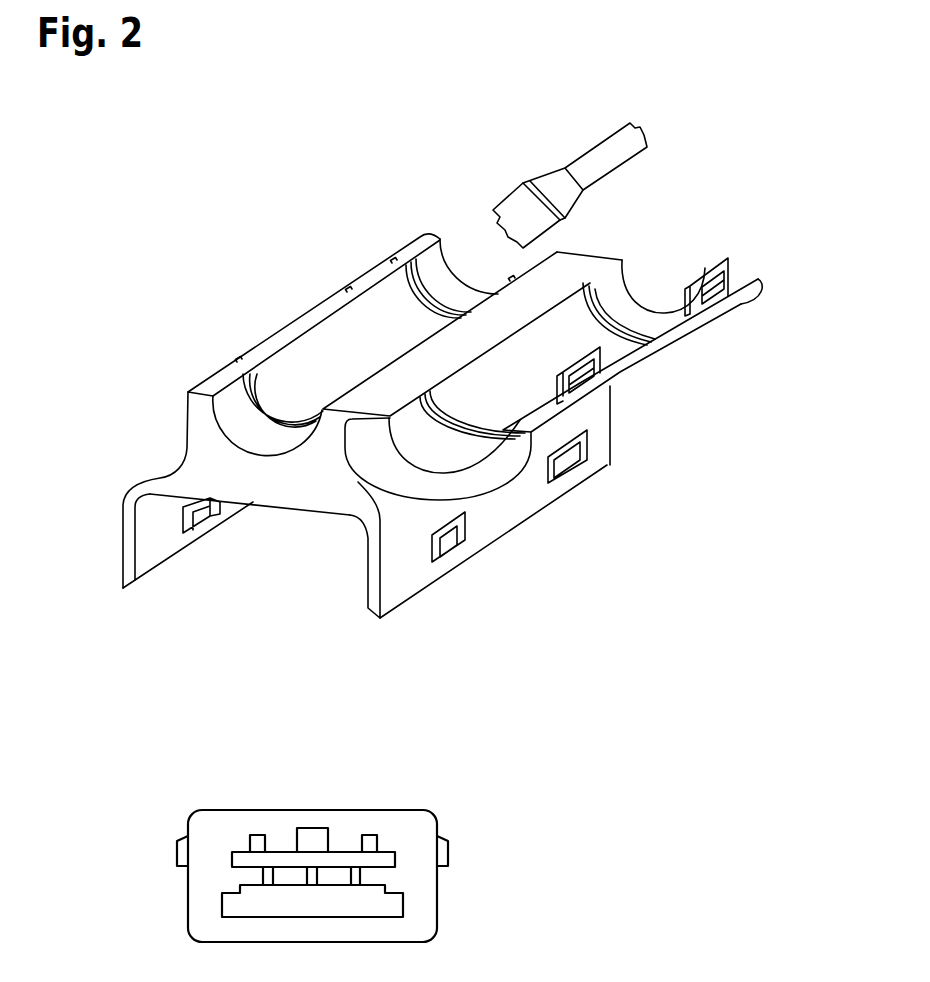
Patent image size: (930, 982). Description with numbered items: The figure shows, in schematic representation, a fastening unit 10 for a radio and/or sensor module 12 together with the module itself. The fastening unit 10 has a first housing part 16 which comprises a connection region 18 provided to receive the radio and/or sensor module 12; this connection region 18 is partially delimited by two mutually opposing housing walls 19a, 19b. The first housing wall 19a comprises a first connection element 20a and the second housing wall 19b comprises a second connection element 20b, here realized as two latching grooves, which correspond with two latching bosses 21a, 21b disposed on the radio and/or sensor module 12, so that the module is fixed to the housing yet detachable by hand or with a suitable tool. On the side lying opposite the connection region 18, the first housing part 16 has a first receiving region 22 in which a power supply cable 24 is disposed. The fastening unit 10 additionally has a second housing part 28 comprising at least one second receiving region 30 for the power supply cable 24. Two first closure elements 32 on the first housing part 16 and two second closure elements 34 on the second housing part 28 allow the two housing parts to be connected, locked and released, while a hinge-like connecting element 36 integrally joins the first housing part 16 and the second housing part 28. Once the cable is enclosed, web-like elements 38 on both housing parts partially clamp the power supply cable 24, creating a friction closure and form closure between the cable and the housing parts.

The fastening unit 10 is at (212, 235).
The radio and/or sensor module 12 is at (147, 799).
The first housing part 16 is at (200, 457).
The connection region 18 is at (307, 553).
The first housing wall 19a is at (148, 547).
The second housing wall 19b is at (410, 576).
The first connection element 20a is at (198, 519).
The second connection element 20b is at (455, 545).
The first latching boss 21a is at (184, 852).
The second latching boss 21b is at (443, 852).
The first receiving region 22 is at (250, 432).
The power supply cable 24 is at (558, 180).
The second housing part 28 is at (744, 276).
The second receiving region 30 is at (437, 457).
The first closure elements 32 is at (379, 273).
The second closure elements 34 is at (702, 309).
The hinge-like connecting element 36 is at (594, 254).
The web-like elements 38 is at (408, 246).